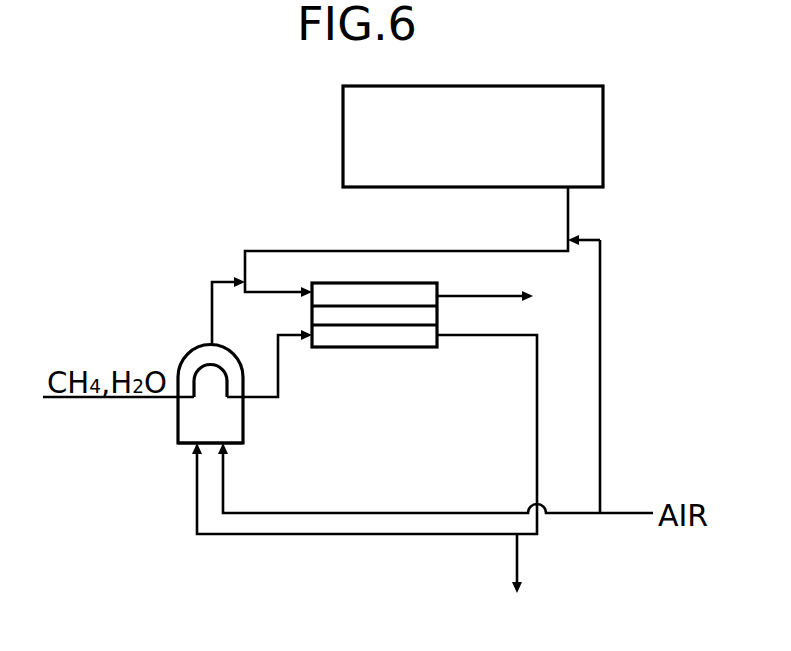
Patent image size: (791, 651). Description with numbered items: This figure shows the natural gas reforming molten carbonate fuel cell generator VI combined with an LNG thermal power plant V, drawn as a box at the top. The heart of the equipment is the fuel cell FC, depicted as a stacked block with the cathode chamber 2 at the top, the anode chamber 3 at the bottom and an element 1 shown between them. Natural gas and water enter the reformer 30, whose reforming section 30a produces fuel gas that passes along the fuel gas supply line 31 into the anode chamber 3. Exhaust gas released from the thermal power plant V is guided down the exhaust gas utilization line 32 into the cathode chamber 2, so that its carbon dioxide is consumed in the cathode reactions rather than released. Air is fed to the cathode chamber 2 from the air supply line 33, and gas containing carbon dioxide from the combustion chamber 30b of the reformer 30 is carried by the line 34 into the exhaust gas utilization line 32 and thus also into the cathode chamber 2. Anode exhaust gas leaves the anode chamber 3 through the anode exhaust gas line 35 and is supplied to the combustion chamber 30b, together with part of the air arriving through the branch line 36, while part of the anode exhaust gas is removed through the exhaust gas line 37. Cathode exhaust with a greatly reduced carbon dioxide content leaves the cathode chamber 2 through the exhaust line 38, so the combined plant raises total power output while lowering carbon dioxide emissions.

The LNG thermal power plant V is at (614, 108).
The natural gas reforming molten carbonate fuel cell generator VI is at (273, 229).
The fuel electrode 1 is at (398, 318).
The cathode chamber 2 is at (353, 292).
The anode chamber 3 is at (343, 347).
The fuel cell FC is at (416, 283).
The reformer 30 is at (179, 362).
The reformer (reforming section) 30a is at (202, 388).
The combustion chamber 30b is at (187, 428).
The fuel gas supply line 31 is at (280, 381).
The exhaust gas utilization line 32 is at (568, 220).
The air supply line 33 is at (600, 378).
The line 34 is at (212, 300).
The anode exhaust gas line 35 is at (537, 428).
The branch line 36 is at (437, 513).
The exhaust gas line 37 is at (517, 556).
The exhaust line 38 is at (502, 296).